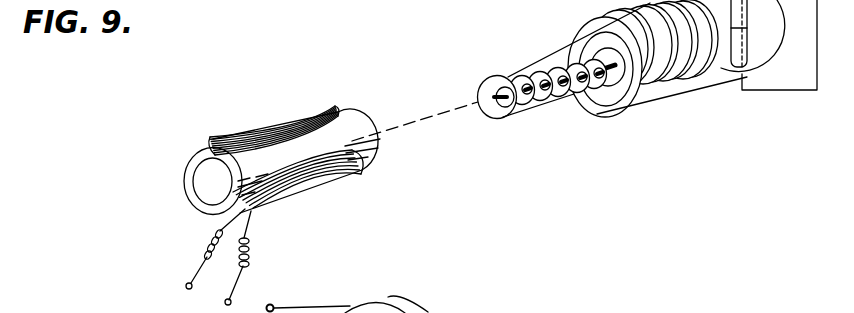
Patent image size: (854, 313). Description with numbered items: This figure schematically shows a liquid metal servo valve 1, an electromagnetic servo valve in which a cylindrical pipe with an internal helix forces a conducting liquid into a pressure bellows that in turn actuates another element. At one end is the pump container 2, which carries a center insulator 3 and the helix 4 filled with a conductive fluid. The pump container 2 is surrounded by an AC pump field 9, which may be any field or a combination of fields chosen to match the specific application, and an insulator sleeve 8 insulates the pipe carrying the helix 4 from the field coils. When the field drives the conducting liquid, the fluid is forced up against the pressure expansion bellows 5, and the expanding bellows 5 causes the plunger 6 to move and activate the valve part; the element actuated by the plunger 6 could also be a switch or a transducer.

The liquid metal servo valve 1 is at (704, 92).
The pump container 2 is at (477, 78).
The center insulator 3 is at (483, 95).
The helix 4 is at (514, 70).
The pressure expansion bellows 5 is at (660, 90).
The plunger 6 is at (750, 33).
The insulator sleeve 8 is at (390, 145).
The AC pump field 9 is at (369, 176).